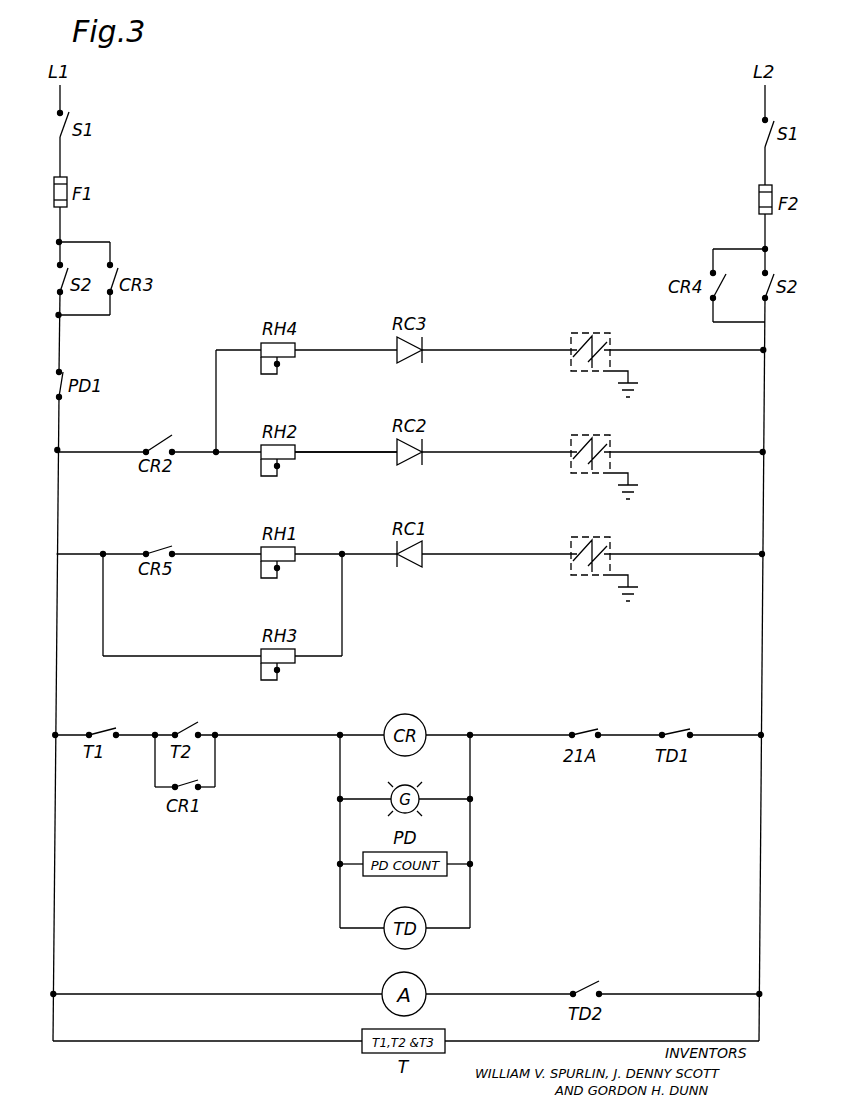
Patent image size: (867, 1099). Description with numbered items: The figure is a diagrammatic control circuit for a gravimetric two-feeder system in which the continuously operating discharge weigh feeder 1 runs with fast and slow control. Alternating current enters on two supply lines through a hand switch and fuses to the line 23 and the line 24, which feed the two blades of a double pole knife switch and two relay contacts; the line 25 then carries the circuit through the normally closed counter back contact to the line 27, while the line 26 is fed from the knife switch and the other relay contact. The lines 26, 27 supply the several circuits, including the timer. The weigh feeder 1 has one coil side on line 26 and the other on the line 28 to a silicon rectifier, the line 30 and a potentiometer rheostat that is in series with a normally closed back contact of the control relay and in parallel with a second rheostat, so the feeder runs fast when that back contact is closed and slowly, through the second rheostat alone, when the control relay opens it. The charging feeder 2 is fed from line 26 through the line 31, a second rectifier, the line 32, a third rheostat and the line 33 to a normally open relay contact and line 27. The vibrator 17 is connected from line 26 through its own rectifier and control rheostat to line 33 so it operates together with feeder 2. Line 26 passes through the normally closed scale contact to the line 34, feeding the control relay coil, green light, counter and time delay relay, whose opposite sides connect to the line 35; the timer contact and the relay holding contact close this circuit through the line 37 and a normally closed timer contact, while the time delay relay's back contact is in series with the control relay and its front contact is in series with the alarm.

The weigh feeder 1 is at (589, 512).
The charging feeder 2 is at (590, 435).
The vibrator 17 is at (589, 308).
The line 23 is at (59, 243).
The line 24 is at (765, 249).
The line 25 is at (58, 315).
The line 26 is at (763, 350).
The line 27 is at (57, 450).
The line 28 is at (506, 537).
The line 30 is at (360, 538).
The line 31 is at (505, 433).
The line 32 is at (341, 452).
The line 33 is at (216, 453).
The line 34 is at (470, 735).
The line 35 is at (215, 735).
The line 37 is at (155, 735).